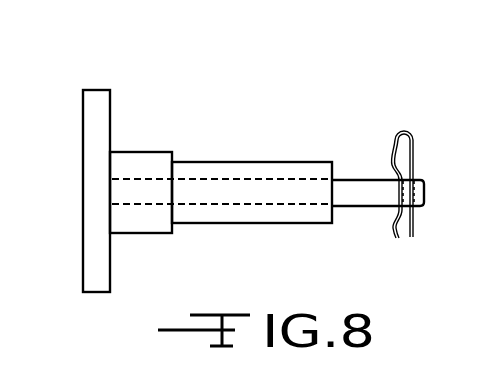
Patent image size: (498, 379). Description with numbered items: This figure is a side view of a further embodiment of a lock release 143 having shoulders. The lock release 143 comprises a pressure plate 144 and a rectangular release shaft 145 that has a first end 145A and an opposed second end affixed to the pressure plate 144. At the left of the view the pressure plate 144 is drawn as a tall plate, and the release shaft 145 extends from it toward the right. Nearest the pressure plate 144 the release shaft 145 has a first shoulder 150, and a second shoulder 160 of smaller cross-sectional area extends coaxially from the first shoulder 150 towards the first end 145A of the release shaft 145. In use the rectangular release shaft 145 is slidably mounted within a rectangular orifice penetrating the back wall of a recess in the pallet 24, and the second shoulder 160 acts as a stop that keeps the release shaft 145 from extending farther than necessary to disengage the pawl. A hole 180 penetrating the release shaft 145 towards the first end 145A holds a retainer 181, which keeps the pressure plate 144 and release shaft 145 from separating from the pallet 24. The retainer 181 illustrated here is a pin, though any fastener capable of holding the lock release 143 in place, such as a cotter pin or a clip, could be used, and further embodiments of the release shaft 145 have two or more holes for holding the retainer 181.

The frame member 24 is at (497, 118).
The lock release 143 is at (184, 88).
The pressure plate 144 is at (83, 222).
The release shaft 145 is at (365, 196).
The first end 145A is at (427, 188).
The first shoulder 150 is at (145, 152).
The second shoulder 160 is at (277, 162).
The hole 180 is at (413, 207).
The retainer 181 is at (398, 127).